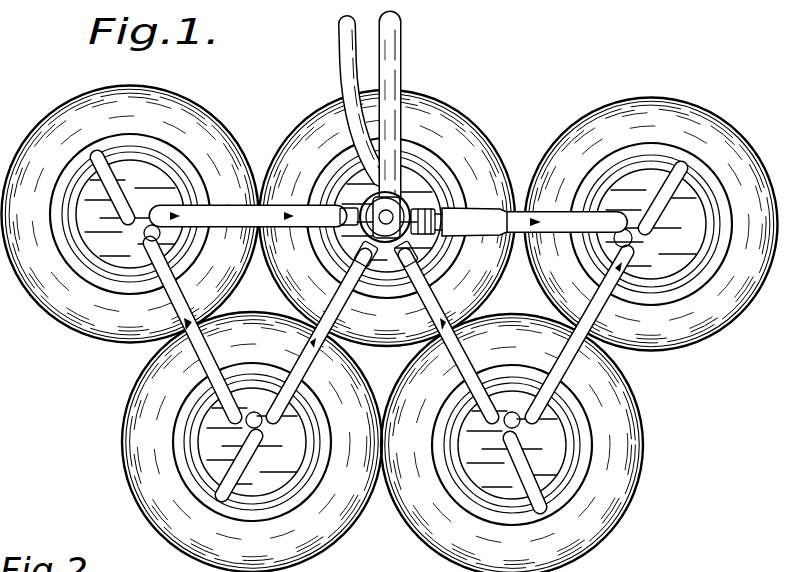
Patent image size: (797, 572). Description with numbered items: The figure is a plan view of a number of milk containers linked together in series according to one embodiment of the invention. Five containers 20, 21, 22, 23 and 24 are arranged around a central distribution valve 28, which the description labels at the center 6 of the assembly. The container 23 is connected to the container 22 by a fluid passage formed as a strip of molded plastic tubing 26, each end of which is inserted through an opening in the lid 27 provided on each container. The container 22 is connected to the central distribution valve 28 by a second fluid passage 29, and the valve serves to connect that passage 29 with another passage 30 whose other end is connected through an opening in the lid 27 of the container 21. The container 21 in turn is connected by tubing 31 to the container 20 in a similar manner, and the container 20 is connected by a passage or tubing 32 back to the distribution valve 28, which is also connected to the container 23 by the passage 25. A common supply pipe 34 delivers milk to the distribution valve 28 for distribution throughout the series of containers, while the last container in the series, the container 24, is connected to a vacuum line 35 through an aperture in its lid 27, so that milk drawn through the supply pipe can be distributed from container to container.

The central hub 6 is at (485, 207).
The container 20 is at (185, 116).
The container 21 is at (137, 416).
The container 22 is at (610, 428).
The container 23 is at (657, 125).
The container 24 is at (327, 131).
The passage 25 is at (545, 213).
The molded plastic tubing 26 is at (622, 340).
The lid 27 is at (690, 207).
The central distribution valve 28 is at (420, 188).
The second fluid passage 29 is at (468, 343).
The passage 30 is at (332, 303).
The tubing 31 is at (152, 342).
The passage or tubing 32 is at (245, 200).
The common supply pipe 34 is at (404, 40).
The vacuum line 35 is at (341, 43).